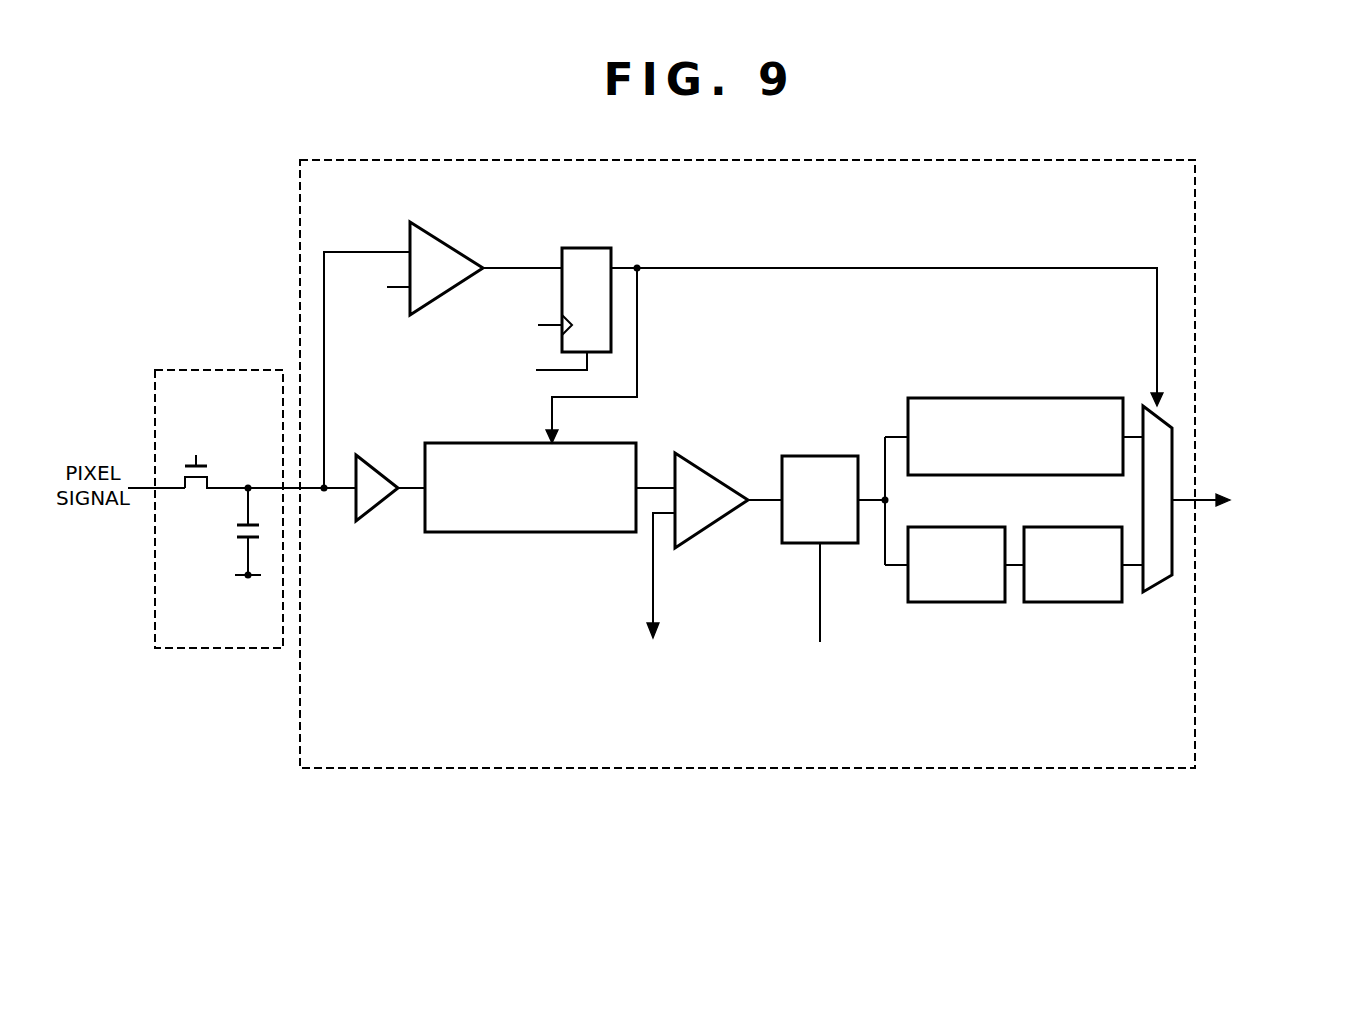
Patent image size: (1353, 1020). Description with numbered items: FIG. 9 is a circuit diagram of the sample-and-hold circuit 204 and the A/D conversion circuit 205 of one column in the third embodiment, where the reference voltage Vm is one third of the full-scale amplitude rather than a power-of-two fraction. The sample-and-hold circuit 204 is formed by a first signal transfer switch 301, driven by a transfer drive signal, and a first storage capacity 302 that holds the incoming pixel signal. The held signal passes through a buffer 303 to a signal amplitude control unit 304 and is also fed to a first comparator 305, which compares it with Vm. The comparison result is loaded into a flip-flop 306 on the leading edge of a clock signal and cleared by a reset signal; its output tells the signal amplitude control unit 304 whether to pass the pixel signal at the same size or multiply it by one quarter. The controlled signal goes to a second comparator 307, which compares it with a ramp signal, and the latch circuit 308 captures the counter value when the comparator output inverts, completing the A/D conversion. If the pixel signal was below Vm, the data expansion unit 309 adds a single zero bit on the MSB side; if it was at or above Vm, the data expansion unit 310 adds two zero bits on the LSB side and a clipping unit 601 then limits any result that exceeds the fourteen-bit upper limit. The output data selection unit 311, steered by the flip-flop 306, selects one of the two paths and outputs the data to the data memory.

The sample-and-hold circuit 204 is at (224, 368).
The A/D conversion circuit 205 is at (1149, 158).
The first signal transfer switch 301 is at (195, 489).
The first storage capacity 302 is at (243, 547).
The buffer 303 is at (381, 463).
The signal amplitude control unit 304 is at (517, 535).
The first comparator 305 is at (447, 240).
The flip-flop 306 is at (585, 245).
The second comparator 307 is at (707, 470).
The latch circuit 308 is at (817, 455).
The data expansion unit 309 is at (953, 396).
The data expansion unit 310 is at (963, 634).
The clipping unit 601 is at (1074, 700).
The output data selection unit 311 is at (1157, 593).